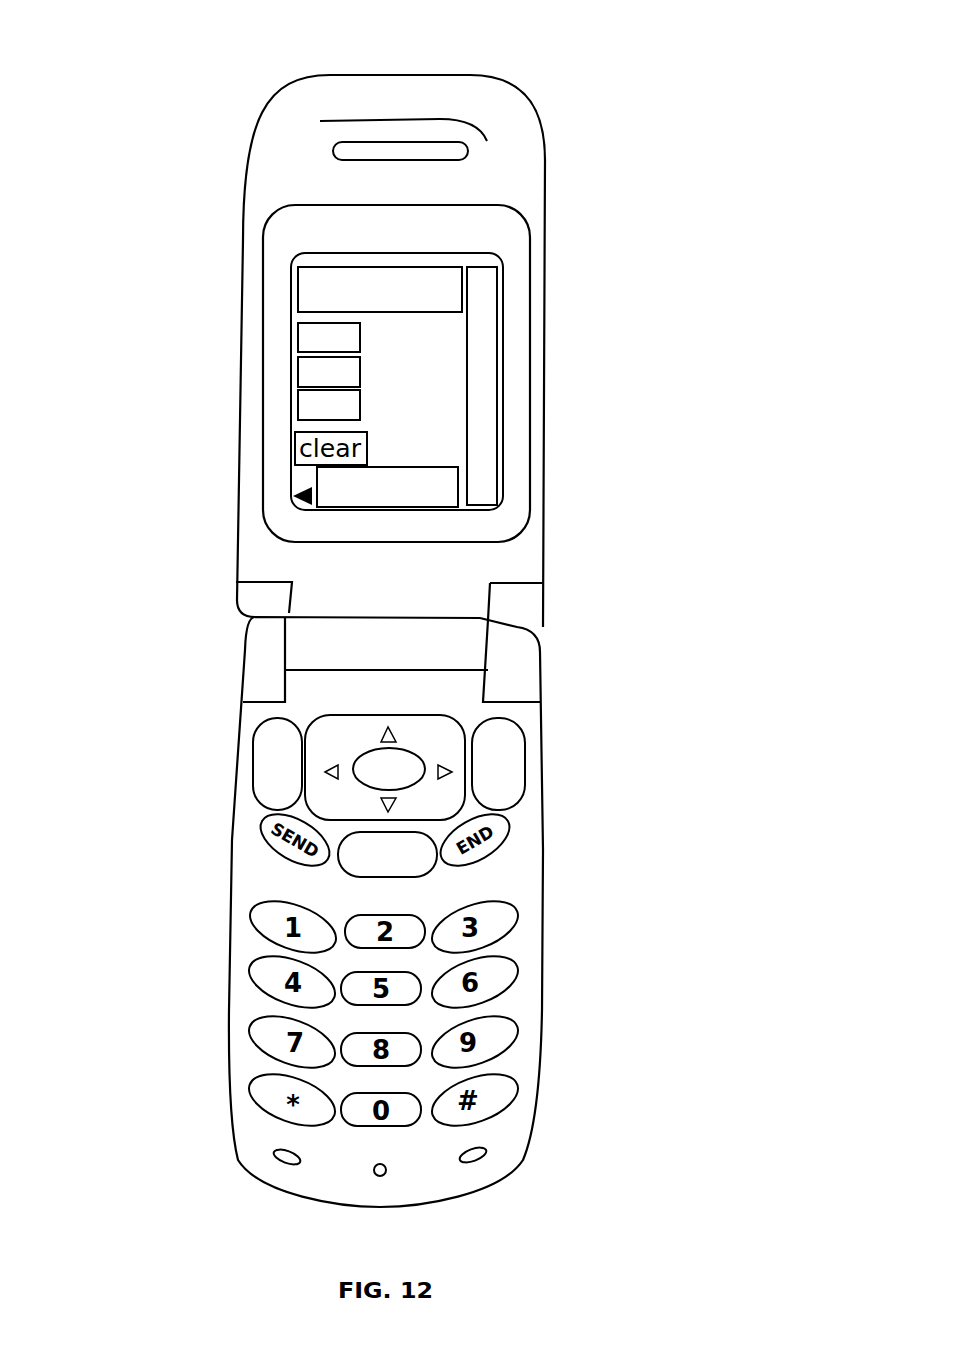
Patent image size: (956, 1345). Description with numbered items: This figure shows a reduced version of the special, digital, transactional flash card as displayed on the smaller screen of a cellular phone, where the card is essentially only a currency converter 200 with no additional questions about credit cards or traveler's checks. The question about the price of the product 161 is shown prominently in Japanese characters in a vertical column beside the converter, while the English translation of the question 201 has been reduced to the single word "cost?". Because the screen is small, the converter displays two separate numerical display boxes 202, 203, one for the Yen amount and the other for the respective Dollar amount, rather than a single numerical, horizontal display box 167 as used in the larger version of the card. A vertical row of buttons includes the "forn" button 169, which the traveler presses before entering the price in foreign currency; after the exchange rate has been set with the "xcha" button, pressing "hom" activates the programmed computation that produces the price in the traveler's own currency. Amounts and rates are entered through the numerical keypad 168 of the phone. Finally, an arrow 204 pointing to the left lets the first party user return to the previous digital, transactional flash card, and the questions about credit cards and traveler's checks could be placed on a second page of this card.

The numerical keypad 168 is at (298, 373).
The currency converter 200 is at (480, 263).
The question about the price of the product 161 is at (493, 310).
The English translation of the question 201 is at (437, 390).
The numerical display box 202 is at (297, 290).
The numerical, horizontal display box 167 is at (298, 338).
The "forn" button 169 is at (300, 412).
The numerical display box 203 is at (317, 475).
The arrow 204 is at (293, 500).